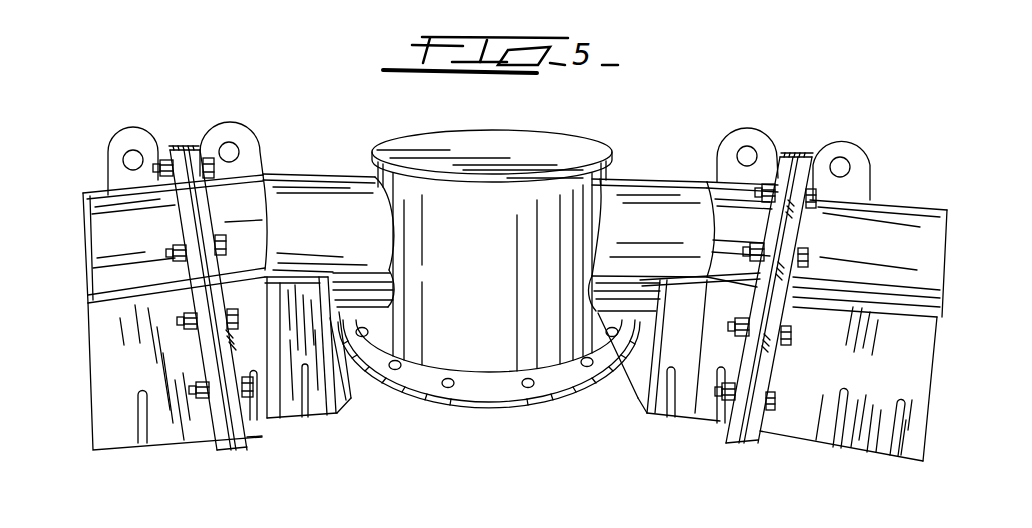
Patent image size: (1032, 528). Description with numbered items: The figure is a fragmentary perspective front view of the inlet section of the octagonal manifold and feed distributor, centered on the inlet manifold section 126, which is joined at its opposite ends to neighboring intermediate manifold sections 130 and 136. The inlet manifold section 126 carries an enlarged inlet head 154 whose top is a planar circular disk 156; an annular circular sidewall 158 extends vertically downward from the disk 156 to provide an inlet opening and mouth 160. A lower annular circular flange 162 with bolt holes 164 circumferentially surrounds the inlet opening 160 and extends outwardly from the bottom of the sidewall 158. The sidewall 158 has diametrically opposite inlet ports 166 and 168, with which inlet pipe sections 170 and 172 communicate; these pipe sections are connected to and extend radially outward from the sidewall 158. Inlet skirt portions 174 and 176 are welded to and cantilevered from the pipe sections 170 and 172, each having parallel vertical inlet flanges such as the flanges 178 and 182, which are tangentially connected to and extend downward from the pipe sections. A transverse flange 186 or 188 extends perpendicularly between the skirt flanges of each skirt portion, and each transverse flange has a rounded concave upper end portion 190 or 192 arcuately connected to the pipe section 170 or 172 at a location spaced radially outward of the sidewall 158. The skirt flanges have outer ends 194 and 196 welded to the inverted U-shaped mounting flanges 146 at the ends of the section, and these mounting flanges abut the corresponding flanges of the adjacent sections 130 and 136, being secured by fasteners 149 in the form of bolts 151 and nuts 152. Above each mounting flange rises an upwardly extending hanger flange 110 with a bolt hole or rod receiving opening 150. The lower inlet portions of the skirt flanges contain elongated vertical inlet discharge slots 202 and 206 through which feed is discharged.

The hanger flange 110 is at (220, 122).
The inlet manifold section 126 is at (532, 128).
The intermediate manifold section 130 is at (888, 198).
The intermediate manifold section 136 is at (93, 190).
The U-shaped mounting flange 146 is at (188, 150).
The fasteners 149 is at (208, 170).
The bolt hole or rod receiving opening 150 is at (242, 140).
The bolts 151 is at (790, 337).
The nuts 152 is at (720, 397).
The inlet head 154 is at (608, 162).
The circular disk 156 is at (475, 163).
The annular sidewall 158 is at (498, 290).
The inlet opening and mouth 160 is at (410, 393).
The lower annular circular flange 162 is at (503, 408).
The bolt holes 164 is at (531, 388).
The inlet port 166 is at (388, 232).
The inlet port 168 is at (596, 240).
The inlet pipe section 170 is at (342, 175).
The inlet pipe section 172 is at (668, 182).
The inlet skirt portion 174 is at (343, 417).
The inlet skirt portion 176 is at (672, 415).
The inlet flange 178 is at (273, 422).
The inlet flange 182 is at (640, 418).
The transverse flange 186 is at (340, 400).
The transverse flange 188 is at (632, 393).
The rounded concave upper end portion 190 is at (280, 237).
The rounded concave upper end portion 192 is at (660, 290).
The outer end 194 is at (210, 220).
The outer end 196 is at (775, 208).
The inlet discharge slots 202 is at (312, 418).
The inlet discharge slots 206 is at (668, 370).